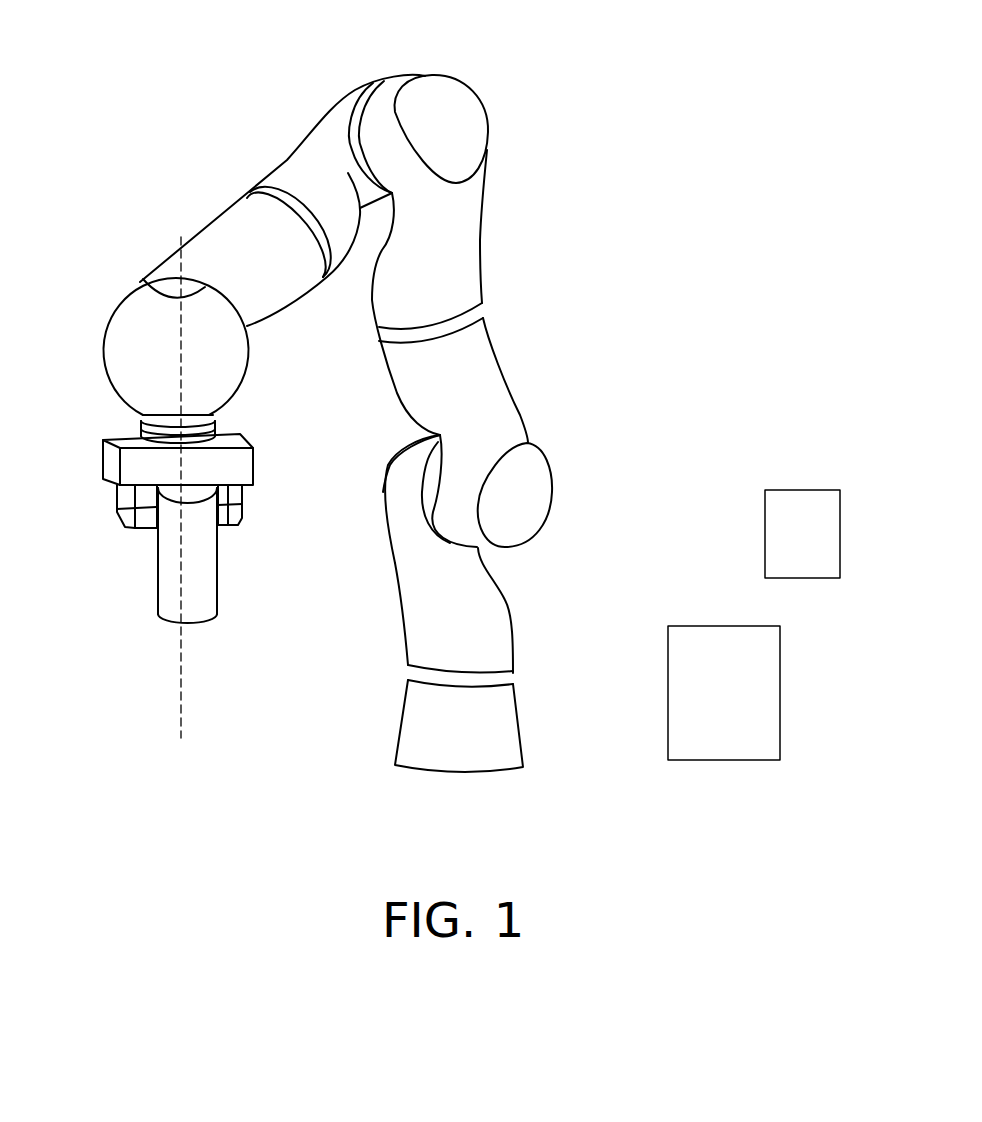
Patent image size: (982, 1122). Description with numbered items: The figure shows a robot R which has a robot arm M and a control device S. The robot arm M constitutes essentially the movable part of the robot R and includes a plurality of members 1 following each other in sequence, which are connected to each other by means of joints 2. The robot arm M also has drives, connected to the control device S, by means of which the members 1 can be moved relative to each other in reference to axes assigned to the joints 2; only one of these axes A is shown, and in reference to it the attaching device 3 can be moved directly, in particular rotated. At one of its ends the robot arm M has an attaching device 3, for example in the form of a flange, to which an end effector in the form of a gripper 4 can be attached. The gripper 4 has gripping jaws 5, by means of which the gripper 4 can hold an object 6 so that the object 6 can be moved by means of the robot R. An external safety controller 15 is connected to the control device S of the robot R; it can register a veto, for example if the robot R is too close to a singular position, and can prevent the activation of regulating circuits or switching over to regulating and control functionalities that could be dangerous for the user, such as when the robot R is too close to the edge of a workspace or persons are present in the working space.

The members 1 is at (310, 157).
The joints 2 is at (356, 92).
The attaching device 3 is at (162, 438).
The gripper 4 is at (107, 470).
The gripping jaws 5 is at (130, 517).
The object 6 is at (168, 587).
The external safety controller 15 is at (788, 553).
The axis A is at (182, 698).
The robot R is at (674, 161).
The robot arm M is at (647, 492).
The control device S is at (714, 710).